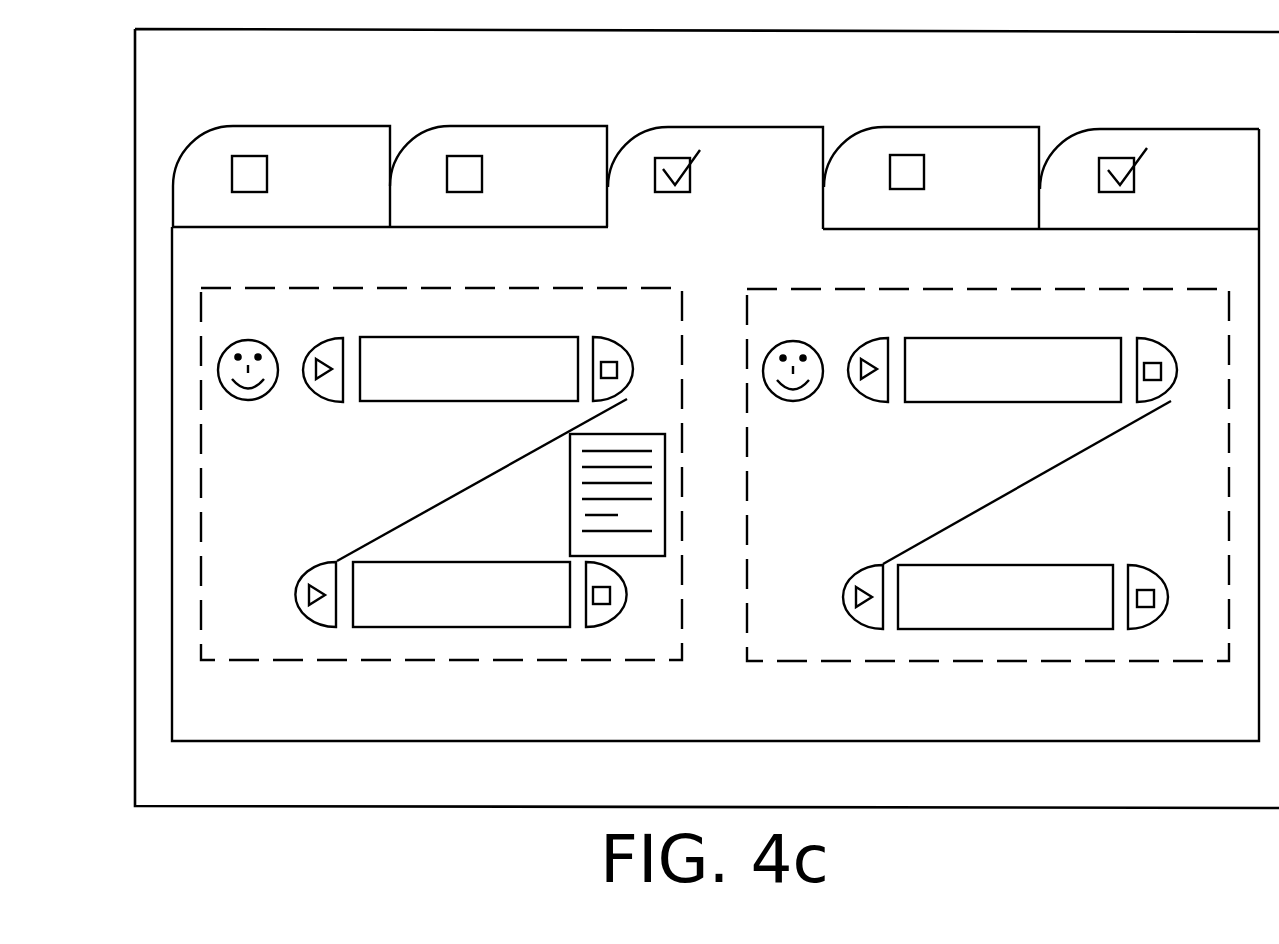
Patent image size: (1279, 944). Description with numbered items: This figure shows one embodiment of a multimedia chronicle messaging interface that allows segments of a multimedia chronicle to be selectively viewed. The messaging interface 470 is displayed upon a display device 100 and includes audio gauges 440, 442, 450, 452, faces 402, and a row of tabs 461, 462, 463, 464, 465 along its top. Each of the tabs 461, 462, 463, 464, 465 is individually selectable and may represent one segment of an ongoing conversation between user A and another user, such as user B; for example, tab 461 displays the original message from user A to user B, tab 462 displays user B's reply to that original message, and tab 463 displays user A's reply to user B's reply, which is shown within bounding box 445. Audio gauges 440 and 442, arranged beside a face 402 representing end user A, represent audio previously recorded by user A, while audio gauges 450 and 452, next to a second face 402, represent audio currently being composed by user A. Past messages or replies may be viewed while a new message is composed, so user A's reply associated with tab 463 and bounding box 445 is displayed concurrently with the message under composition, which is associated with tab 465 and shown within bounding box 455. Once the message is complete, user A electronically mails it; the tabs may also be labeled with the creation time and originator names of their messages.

The display device 100 is at (1268, 801).
The messaging interface 470 is at (1231, 734).
The tab 461 is at (331, 124).
The tab 462 is at (539, 124).
The tab 463 is at (762, 125).
The tab 464 is at (975, 125).
The tab 465 is at (1198, 127).
The face 402 is at (249, 415).
The audio gauge 440 is at (457, 423).
The audio gauge 442 is at (524, 548).
The bounding box 445 is at (273, 647).
The audio gauge 450 is at (1002, 423).
The audio gauge 452 is at (1067, 549).
The bounding box 455 is at (819, 650).